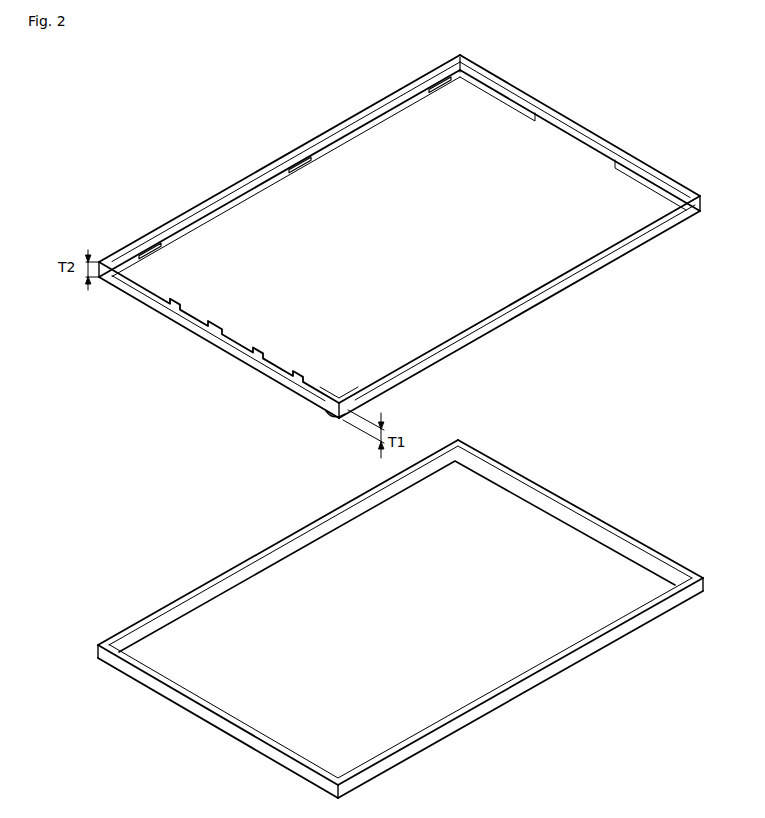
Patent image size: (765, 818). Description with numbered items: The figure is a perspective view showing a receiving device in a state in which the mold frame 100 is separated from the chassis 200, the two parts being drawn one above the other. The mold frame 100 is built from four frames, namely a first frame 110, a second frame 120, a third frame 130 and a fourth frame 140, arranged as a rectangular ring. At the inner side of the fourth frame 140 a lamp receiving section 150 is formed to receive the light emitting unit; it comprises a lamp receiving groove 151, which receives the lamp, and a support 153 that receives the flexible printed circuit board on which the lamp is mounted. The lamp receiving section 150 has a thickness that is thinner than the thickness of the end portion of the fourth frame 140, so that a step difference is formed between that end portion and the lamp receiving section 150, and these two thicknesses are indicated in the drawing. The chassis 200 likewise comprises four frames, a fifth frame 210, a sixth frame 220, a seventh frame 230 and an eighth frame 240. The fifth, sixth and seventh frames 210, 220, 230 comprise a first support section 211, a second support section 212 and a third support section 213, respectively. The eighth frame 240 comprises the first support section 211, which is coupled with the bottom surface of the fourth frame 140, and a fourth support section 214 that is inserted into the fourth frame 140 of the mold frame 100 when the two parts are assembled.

The mold frame 100 is at (399, 233).
The first frame 110 is at (329, 127).
The second frame 120 is at (507, 81).
The third frame 130 is at (580, 262).
The fourth frame 140 is at (316, 385).
The lamp receiving section 150 is at (219, 335).
The lamp receiving groove 151 is at (207, 318).
The support 153 is at (234, 338).
The chassis 200 is at (365, 612).
The fifth frame 210 is at (393, 542).
The first support section 211 is at (147, 634).
The second support section 212 is at (96, 653).
The third support section 213 is at (119, 628).
The fourth support section 214 is at (197, 711).
The sixth frame 220 is at (647, 535).
The seventh frame 230 is at (500, 720).
The eighth frame 240 is at (182, 721).